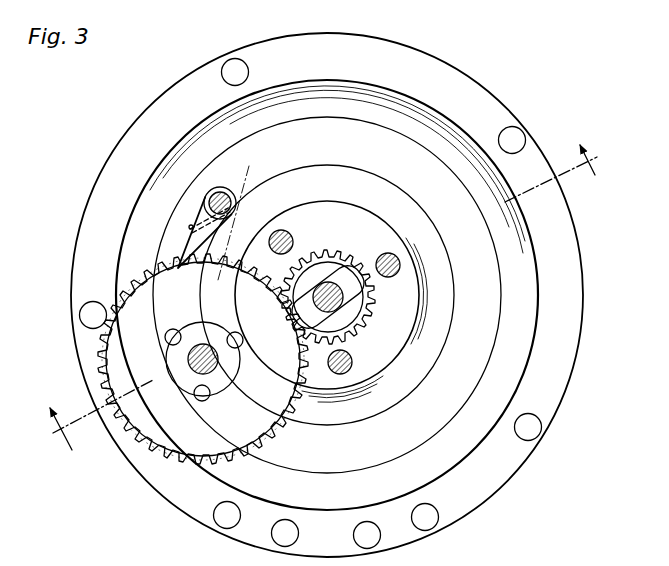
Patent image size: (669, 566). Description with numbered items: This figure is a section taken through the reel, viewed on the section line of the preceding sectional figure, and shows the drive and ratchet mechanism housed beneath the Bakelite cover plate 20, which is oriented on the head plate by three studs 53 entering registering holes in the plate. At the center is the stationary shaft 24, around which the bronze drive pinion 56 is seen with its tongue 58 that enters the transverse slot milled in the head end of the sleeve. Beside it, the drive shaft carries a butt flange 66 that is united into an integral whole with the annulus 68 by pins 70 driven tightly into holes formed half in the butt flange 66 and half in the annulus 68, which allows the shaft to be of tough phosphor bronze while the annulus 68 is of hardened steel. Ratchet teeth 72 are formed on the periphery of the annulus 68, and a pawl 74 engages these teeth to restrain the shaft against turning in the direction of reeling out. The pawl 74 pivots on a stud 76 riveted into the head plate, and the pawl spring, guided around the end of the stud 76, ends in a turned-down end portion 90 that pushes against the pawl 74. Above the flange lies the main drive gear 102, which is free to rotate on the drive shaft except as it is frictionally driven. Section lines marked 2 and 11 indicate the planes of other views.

The cover plate 20 is at (160, 148).
The ratchet teeth 72 is at (133, 279).
The annulus 68 is at (209, 359).
The main drive gear 102 is at (276, 432).
The butt flange 66 is at (176, 356).
The pins 70 is at (236, 331).
The drive pinion 56 is at (332, 299).
The tongue 58 is at (303, 308).
The stationary shaft 24 is at (340, 298).
The studs 53 is at (383, 256).
The pawl 74 is at (190, 221).
The stud 76 is at (232, 203).
The end portion 90 is at (193, 238).
The section line 11 is at (268, 172).
The section line 2- 2 is at (327, 299).